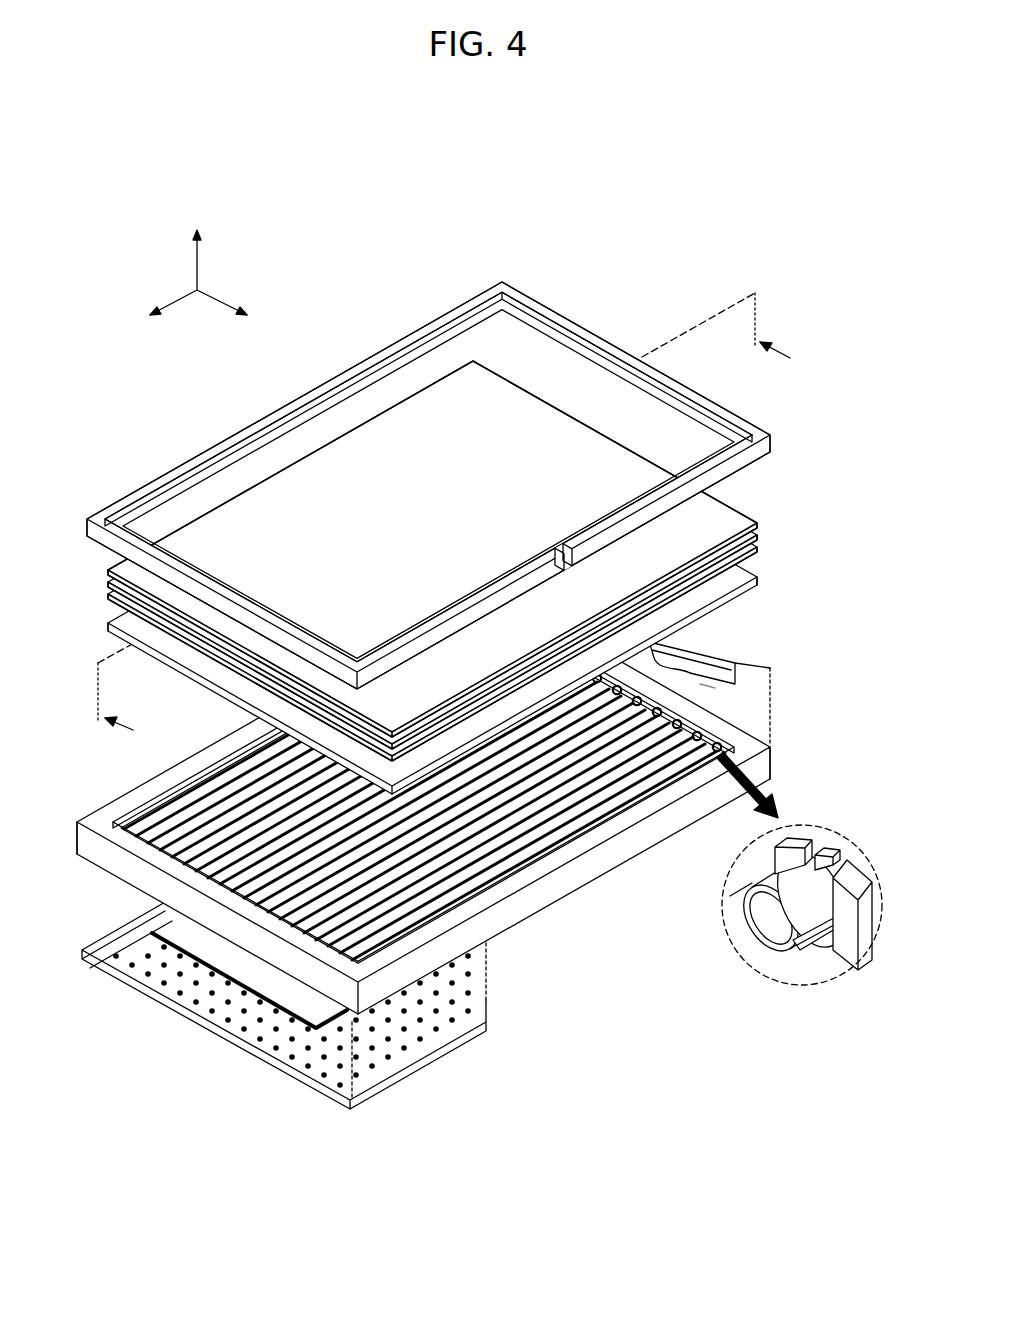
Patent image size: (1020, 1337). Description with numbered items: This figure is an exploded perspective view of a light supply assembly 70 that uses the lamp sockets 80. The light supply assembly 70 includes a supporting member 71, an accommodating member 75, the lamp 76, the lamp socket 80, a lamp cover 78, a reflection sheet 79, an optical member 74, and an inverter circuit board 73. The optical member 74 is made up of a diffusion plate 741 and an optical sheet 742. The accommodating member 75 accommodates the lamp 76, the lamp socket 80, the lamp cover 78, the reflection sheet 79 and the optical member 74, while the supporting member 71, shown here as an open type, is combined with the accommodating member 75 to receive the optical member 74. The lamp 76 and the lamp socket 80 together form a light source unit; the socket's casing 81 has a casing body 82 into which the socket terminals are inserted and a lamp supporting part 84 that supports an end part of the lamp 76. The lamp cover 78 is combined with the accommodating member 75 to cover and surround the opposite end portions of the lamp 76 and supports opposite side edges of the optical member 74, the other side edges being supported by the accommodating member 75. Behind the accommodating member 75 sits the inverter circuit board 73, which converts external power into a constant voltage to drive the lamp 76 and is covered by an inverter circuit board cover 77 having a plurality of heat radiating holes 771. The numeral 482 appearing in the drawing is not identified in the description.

The light supply assembly 70 is at (396, 222).
The supporting member 71 is at (770, 452).
The inverter circuit board 73 is at (180, 933).
The optical member 74 is at (480, 577).
The diffusion plate 741 is at (745, 583).
The optical sheet 742 is at (812, 594).
The accommodating member 75 is at (762, 773).
The lamp 76 is at (683, 652).
The inverter circuit board cover 77 is at (323, 1092).
The heat radiating holes 771 is at (163, 1003).
The lamp cover 78 is at (690, 664).
The reflection sheet 79 is at (740, 745).
The lamp socket 80 is at (693, 713).
The casing 81 is at (829, 967).
The casing body 82 is at (847, 968).
The lamp supporting part 84 is at (816, 950).
The lamp socket 482 is at (715, 688).